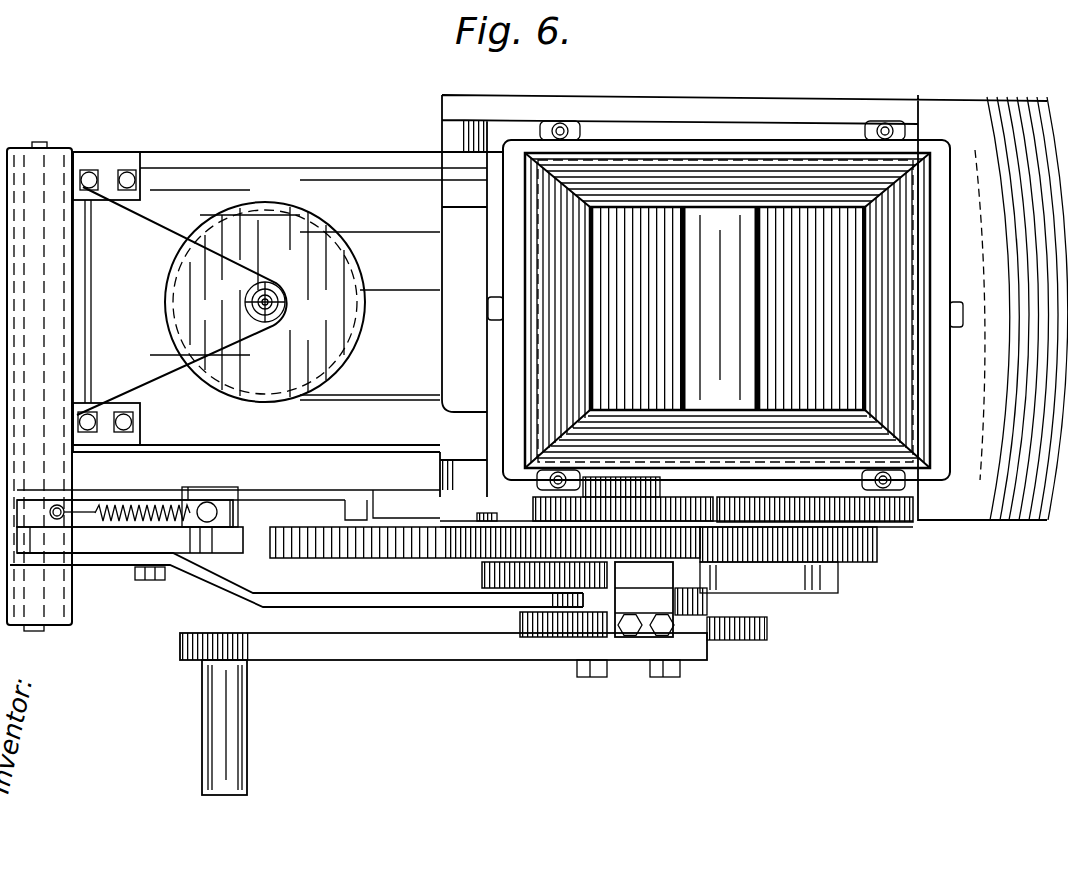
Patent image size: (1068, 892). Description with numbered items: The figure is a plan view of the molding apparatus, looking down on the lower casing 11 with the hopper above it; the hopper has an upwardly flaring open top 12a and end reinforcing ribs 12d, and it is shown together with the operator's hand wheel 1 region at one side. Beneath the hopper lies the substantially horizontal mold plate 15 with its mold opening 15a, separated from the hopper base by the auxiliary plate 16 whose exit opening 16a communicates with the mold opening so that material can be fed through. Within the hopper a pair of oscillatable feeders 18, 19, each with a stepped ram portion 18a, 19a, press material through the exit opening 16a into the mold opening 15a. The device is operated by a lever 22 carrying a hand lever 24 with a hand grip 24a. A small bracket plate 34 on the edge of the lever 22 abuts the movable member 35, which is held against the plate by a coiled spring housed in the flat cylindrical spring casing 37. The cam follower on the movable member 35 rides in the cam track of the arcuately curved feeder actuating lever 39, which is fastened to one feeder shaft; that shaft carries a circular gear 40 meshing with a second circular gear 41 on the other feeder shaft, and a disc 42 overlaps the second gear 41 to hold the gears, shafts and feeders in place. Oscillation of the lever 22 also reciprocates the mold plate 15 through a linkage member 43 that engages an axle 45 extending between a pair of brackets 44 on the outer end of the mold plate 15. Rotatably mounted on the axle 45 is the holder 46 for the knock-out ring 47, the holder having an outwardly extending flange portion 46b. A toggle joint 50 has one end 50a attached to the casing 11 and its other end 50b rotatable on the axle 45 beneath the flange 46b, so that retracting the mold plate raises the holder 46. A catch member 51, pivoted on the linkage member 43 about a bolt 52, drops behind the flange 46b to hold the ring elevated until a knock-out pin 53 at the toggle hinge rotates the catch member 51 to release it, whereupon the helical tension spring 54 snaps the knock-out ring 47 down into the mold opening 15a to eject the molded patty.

The hand wheel 1 is at (1040, 148).
The lower casing 11 is at (455, 135).
The upwardly flaring open top 12a is at (933, 223).
The end reinforcing ribs 12d is at (488, 307).
The mold plate 15 is at (325, 158).
The mold opening 15a is at (353, 237).
The auxiliary plate 16 is at (728, 213).
The exit opening 16a is at (757, 365).
The oscillatable feeder 18 is at (783, 320).
The ram portion 18a is at (850, 285).
The oscillatable feeder 19 is at (667, 262).
The ram portion 19a is at (600, 292).
The lever 22 is at (555, 622).
The hand lever 24 is at (395, 650).
The hand grip 24a is at (227, 737).
The bracket plate 34 is at (648, 605).
The movable member 35 is at (507, 573).
The spring casing 37 is at (757, 540).
The feeder actuating lever 39 is at (405, 550).
The circular gear 40 is at (623, 499).
The second circular gear 41 is at (815, 499).
The disc 42 is at (518, 520).
The linkage member 43 is at (335, 600).
The brackets 44 is at (112, 165).
The axle 45 is at (43, 142).
The holder 46 is at (157, 223).
The flange portion 46b is at (60, 482).
The knock-out ring 47 is at (297, 230).
The toggle joint 50 is at (287, 485).
The toggle joint end 50a is at (340, 480).
The toggle joint end 50b is at (167, 495).
The catch member 51 is at (105, 537).
The bolt 52 is at (150, 577).
The knock-out pin 53 is at (207, 553).
The helical tension spring 54 is at (140, 504).